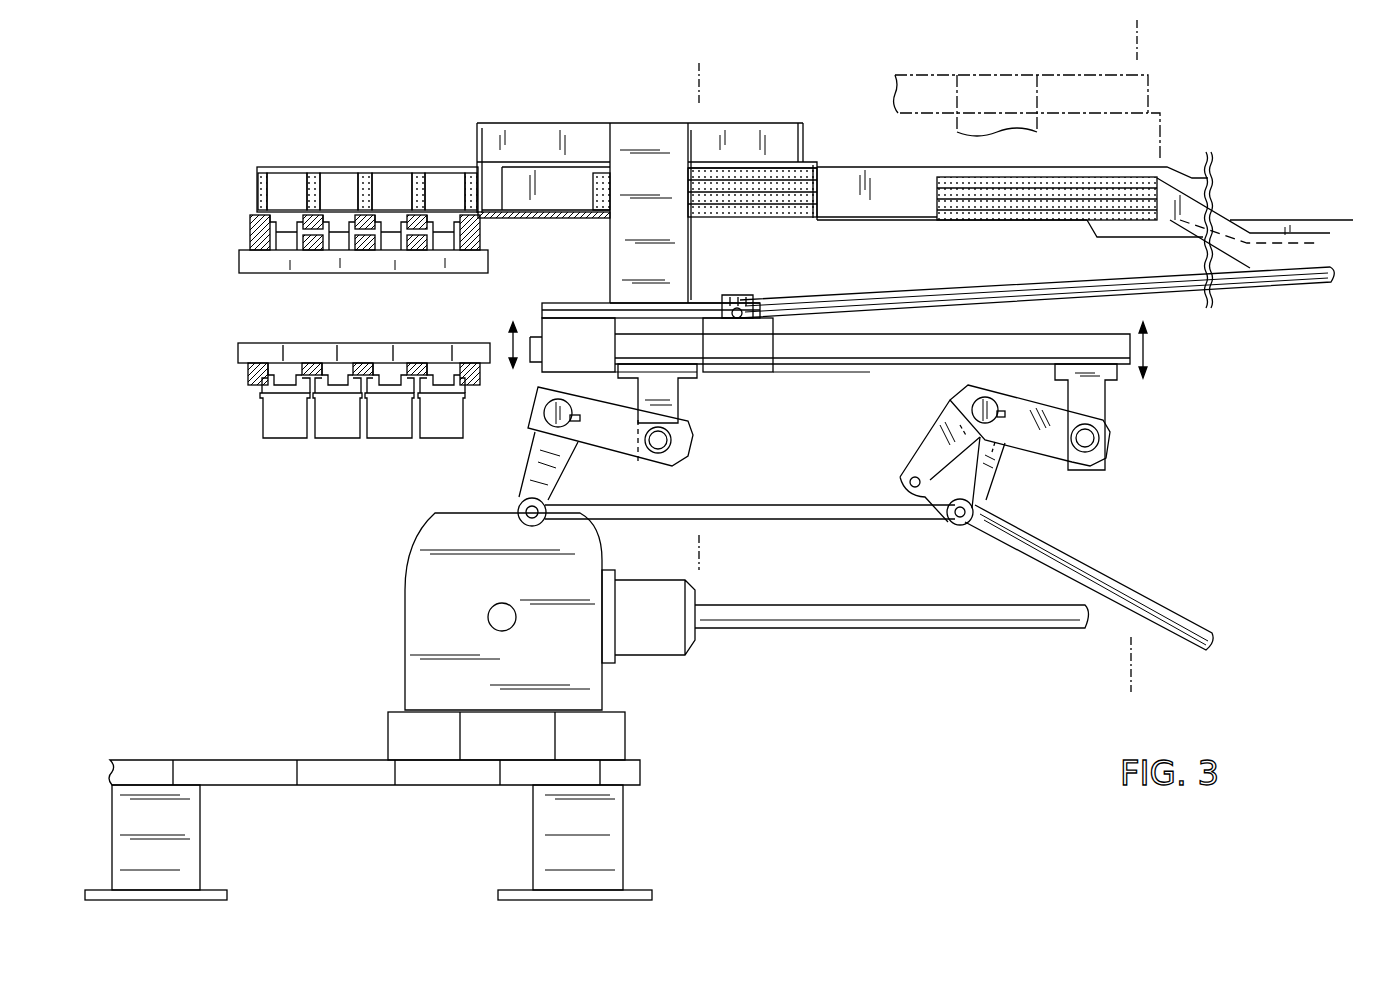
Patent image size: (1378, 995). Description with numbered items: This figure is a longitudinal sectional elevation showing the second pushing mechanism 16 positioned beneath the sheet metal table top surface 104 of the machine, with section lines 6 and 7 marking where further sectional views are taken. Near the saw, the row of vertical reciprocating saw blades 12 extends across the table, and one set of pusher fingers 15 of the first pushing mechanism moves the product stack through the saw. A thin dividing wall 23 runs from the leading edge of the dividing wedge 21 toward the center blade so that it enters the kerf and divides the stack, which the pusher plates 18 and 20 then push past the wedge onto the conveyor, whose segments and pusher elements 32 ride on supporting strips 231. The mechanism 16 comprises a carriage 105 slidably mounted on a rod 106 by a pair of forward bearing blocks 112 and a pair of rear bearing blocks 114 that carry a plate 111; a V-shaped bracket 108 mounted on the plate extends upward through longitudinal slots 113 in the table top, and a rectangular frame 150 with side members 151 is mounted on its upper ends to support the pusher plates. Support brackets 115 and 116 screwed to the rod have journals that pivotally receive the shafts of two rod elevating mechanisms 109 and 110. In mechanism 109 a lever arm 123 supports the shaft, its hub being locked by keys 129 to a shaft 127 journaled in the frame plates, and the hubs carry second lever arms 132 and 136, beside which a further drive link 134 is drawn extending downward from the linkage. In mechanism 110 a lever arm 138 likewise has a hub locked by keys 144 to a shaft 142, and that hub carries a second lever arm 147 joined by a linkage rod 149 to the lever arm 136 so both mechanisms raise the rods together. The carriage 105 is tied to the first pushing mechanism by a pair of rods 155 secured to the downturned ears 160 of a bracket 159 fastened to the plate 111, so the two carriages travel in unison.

The section line 6— 6 is at (1142, 45).
The section line 7— 7 is at (704, 79).
The vertical reciprocating saw blades 12 is at (1212, 170).
The pusher fingers 15 is at (1224, 214).
The second pushing mechanism 16 is at (1163, 358).
The pusher plate 18 is at (818, 150).
The pusher plate 20 is at (478, 150).
The dividing wedge 21 is at (548, 213).
The dividing wall 23 is at (912, 180).
The pusher elements 32 is at (290, 178).
The sheet metal table top surface 104 is at (848, 200).
The carriage 105 is at (774, 298).
The rod 106 is at (1072, 343).
The V-shaped bracket 108 is at (688, 233).
The rod elevating mechanism 109 is at (1036, 483).
The rod elevating mechanism 110 is at (526, 438).
The plate 111 is at (690, 303).
The forward bearing blocks 112 is at (558, 330).
The slots 113 is at (862, 222).
The rear bearing blocks 114 is at (745, 372).
The support bracket 115 is at (1105, 400).
The support bracket 116 is at (676, 404).
The lever arm 123 is at (1012, 441).
The shaft 127 is at (970, 412).
The keys 129 is at (980, 404).
The second lever arm 132 is at (932, 452).
The drive bar 134 is at (1100, 578).
The second lever arm 136 is at (984, 476).
The lever arm 138 is at (598, 453).
The shaft 142 is at (545, 412).
The keys 144 is at (580, 418).
The second lever arm 147 is at (542, 469).
The linkage rod 149 is at (825, 515).
The rectangular frame 150 is at (549, 121).
The side members 151 is at (766, 128).
The rods 155 is at (934, 300).
The bracket 159 is at (740, 295).
The downturned ears 160 is at (731, 322).
The supporting strips 231 is at (250, 228).